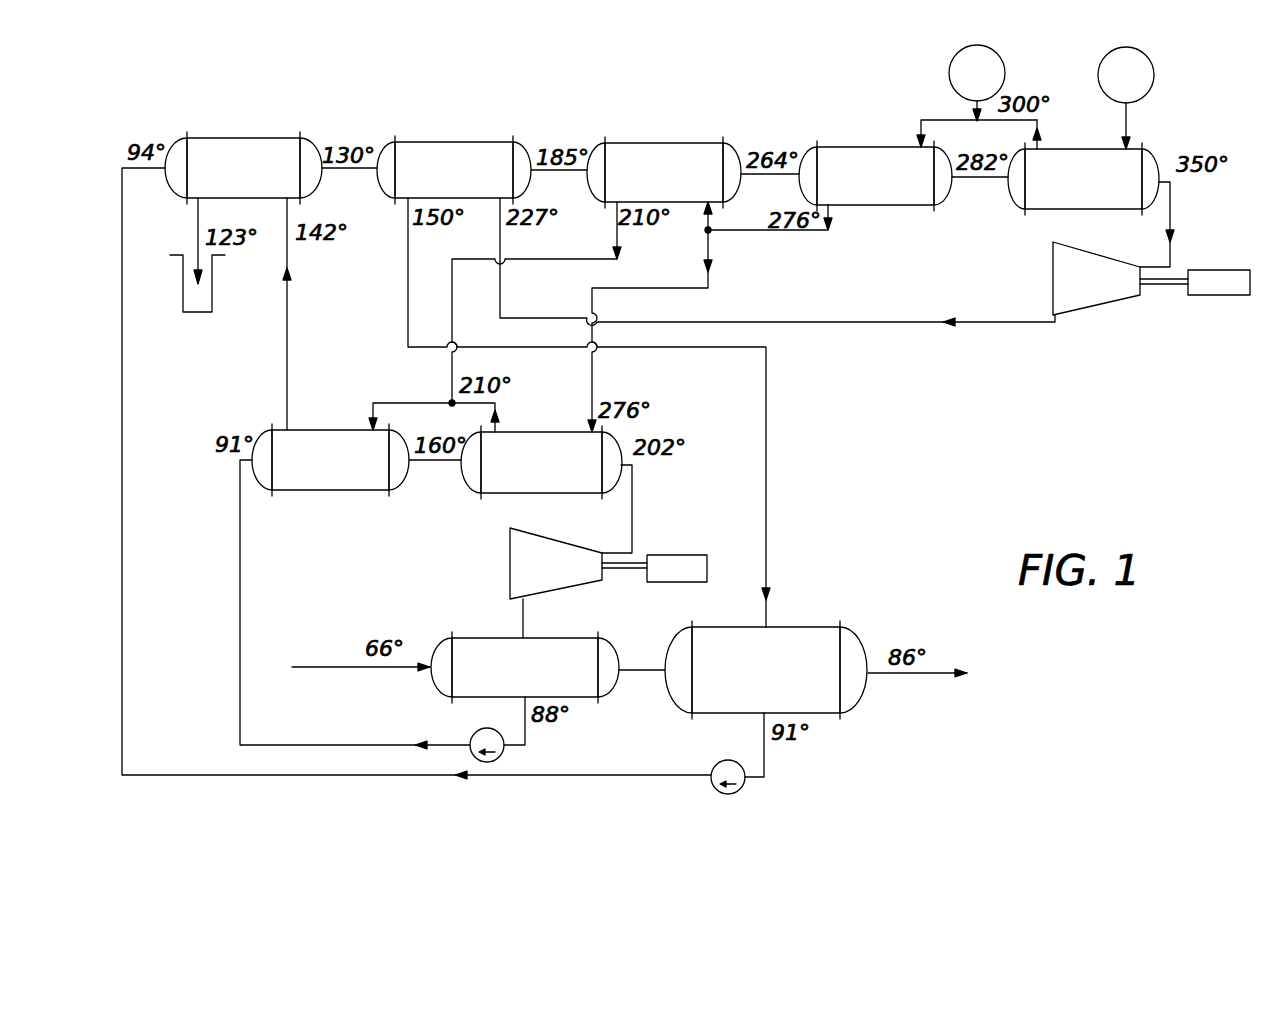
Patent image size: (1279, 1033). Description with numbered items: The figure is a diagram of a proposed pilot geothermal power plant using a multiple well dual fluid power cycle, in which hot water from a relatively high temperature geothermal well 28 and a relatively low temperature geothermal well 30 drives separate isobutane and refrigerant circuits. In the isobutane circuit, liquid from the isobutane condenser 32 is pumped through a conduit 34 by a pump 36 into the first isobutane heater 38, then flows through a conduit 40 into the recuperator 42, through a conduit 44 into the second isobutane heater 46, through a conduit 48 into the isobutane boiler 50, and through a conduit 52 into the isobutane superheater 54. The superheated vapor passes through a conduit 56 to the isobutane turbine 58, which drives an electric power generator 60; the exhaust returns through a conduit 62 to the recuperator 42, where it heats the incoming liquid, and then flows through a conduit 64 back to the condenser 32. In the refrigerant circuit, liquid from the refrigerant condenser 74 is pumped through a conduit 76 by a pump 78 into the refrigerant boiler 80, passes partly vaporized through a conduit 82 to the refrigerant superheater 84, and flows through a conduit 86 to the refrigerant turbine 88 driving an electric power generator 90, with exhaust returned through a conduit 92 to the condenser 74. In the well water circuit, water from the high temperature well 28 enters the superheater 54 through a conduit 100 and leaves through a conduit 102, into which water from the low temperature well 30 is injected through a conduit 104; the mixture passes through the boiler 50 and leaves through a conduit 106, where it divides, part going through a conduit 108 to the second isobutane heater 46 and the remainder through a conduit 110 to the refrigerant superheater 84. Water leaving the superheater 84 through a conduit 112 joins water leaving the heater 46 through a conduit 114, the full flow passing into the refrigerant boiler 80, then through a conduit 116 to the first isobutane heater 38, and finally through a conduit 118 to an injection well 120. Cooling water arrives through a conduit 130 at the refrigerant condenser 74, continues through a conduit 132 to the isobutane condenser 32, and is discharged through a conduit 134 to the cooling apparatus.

The high temperature geothermal well 28 is at (1147, 56).
The low temperature geothermal well 30 is at (963, 47).
The isobutane condenser 32 is at (812, 627).
The conduit 34 is at (122, 387).
The pump 36 is at (745, 790).
The first isobutane heater 38 is at (232, 138).
The conduit 40 is at (333, 170).
The recuperator 42 is at (455, 142).
The conduit 44 is at (543, 172).
The second isobutane heater 46 is at (676, 143).
The conduit 48 is at (752, 176).
The isobutane boiler 50 is at (860, 147).
The conduit 52 is at (960, 180).
The isobutane superheater 54 is at (1082, 149).
The conduit 56 is at (1172, 205).
The isobutane turbine 58 is at (1100, 258).
The electric power generator 60 is at (1222, 297).
The conduit 62 is at (848, 325).
The conduit 64 is at (768, 445).
The R-22 condenser 74 is at (478, 638).
The conduit 76 is at (356, 745).
The pump 78 is at (504, 752).
The R-22 boiler 80 is at (330, 492).
The conduit 82 is at (415, 465).
The R-22 superheater 84 is at (538, 432).
The conduit 86 is at (634, 490).
The R-22 turbine 88 is at (565, 548).
The electric power generator 90 is at (682, 555).
The conduit 92 is at (526, 610).
The conduit 100 is at (1130, 118).
The conduit 102 is at (930, 104).
The conduit 104 is at (970, 117).
The conduit 106 is at (802, 235).
The conduit 108 is at (704, 230).
The conduit 110 is at (712, 288).
The conduit 112 is at (425, 403).
The conduit 114 is at (512, 262).
The conduit 116 is at (287, 356).
The conduit 118 is at (196, 208).
The injection well 120 is at (216, 294).
The conduit 130 is at (322, 665).
The conduit 132 is at (637, 668).
The conduit 134 is at (888, 678).